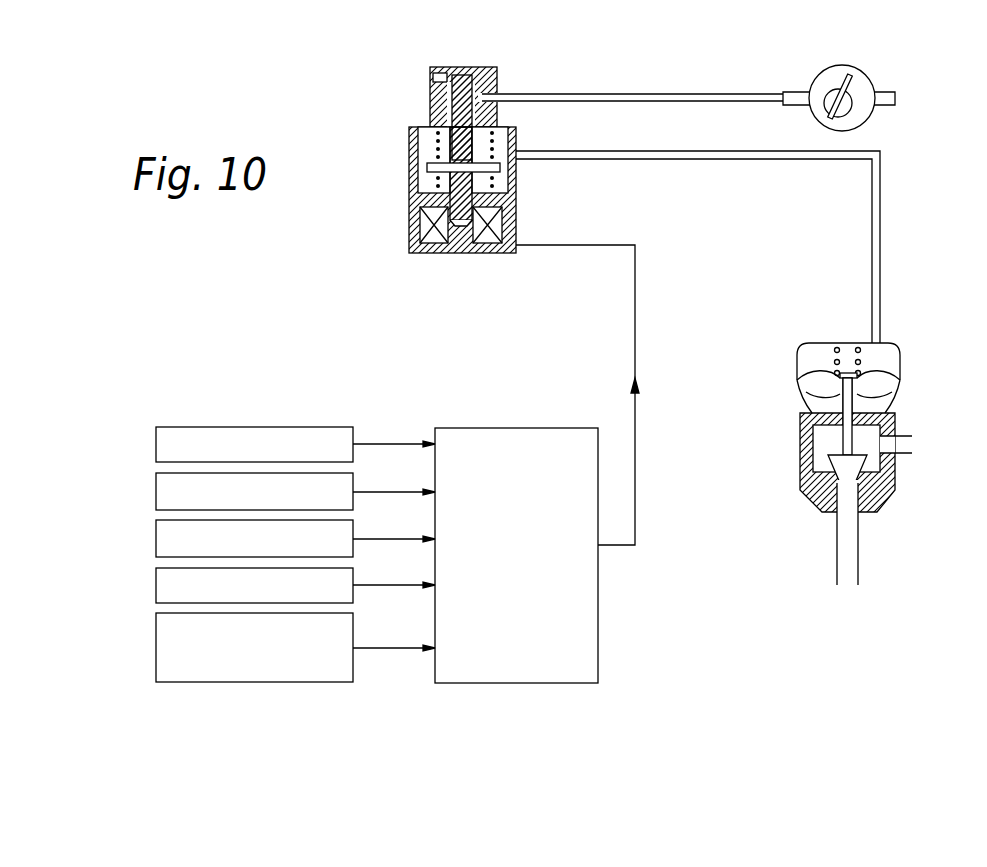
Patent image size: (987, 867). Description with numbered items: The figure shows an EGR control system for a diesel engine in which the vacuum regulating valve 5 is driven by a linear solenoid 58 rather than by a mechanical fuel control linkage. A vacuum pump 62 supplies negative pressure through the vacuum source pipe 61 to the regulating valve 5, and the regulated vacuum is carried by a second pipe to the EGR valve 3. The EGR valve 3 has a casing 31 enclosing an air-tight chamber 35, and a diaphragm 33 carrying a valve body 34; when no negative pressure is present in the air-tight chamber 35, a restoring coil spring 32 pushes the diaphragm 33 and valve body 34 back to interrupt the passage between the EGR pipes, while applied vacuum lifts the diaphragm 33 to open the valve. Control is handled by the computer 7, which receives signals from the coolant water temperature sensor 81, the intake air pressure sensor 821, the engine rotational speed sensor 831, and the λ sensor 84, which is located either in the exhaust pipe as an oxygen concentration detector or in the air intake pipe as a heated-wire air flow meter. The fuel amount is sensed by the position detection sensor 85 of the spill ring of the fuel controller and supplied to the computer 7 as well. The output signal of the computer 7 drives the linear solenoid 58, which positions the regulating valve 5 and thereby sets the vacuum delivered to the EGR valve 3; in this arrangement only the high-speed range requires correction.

The EGR valve 3 is at (905, 350).
The regulating valve 5 is at (497, 76).
The computer 7 is at (527, 428).
The casing 31 is at (905, 376).
The restoring coil spring 32 is at (837, 345).
The diaphragm 33 is at (893, 405).
The valve body 34 is at (808, 395).
The air-tight chamber 35 is at (883, 350).
The linear solenoid 58 is at (517, 222).
The vacuum source pipe 61 is at (703, 94).
The vacuum pump 62 is at (876, 82).
The coolant water temperature sensor 81 is at (155, 443).
The intake air pressure sensor 821 is at (156, 493).
The engine rotational speed sensor 831 is at (156, 540).
The λ sensor 84 is at (156, 584).
The position detection sensor 85 is at (156, 646).